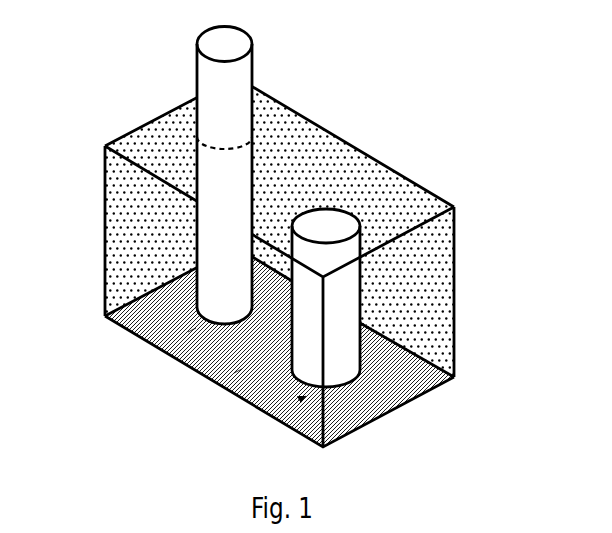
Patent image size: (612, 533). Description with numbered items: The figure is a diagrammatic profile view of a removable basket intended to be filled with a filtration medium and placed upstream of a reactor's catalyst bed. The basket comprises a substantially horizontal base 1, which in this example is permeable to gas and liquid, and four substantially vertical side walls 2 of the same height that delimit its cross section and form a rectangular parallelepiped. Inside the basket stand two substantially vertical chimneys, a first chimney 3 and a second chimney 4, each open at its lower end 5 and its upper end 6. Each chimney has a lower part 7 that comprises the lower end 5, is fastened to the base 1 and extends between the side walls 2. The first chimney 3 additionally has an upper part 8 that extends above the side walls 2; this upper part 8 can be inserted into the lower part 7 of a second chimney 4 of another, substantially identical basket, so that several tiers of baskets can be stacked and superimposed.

The base 1 is at (230, 392).
The side walls 2 is at (133, 225).
The first chimney 3 is at (194, 82).
The second chimney 4 is at (365, 292).
The lower end 5 is at (160, 347).
The upper end 6 is at (228, 43).
The lower part 7 is at (205, 267).
The upper part 8 is at (204, 121).